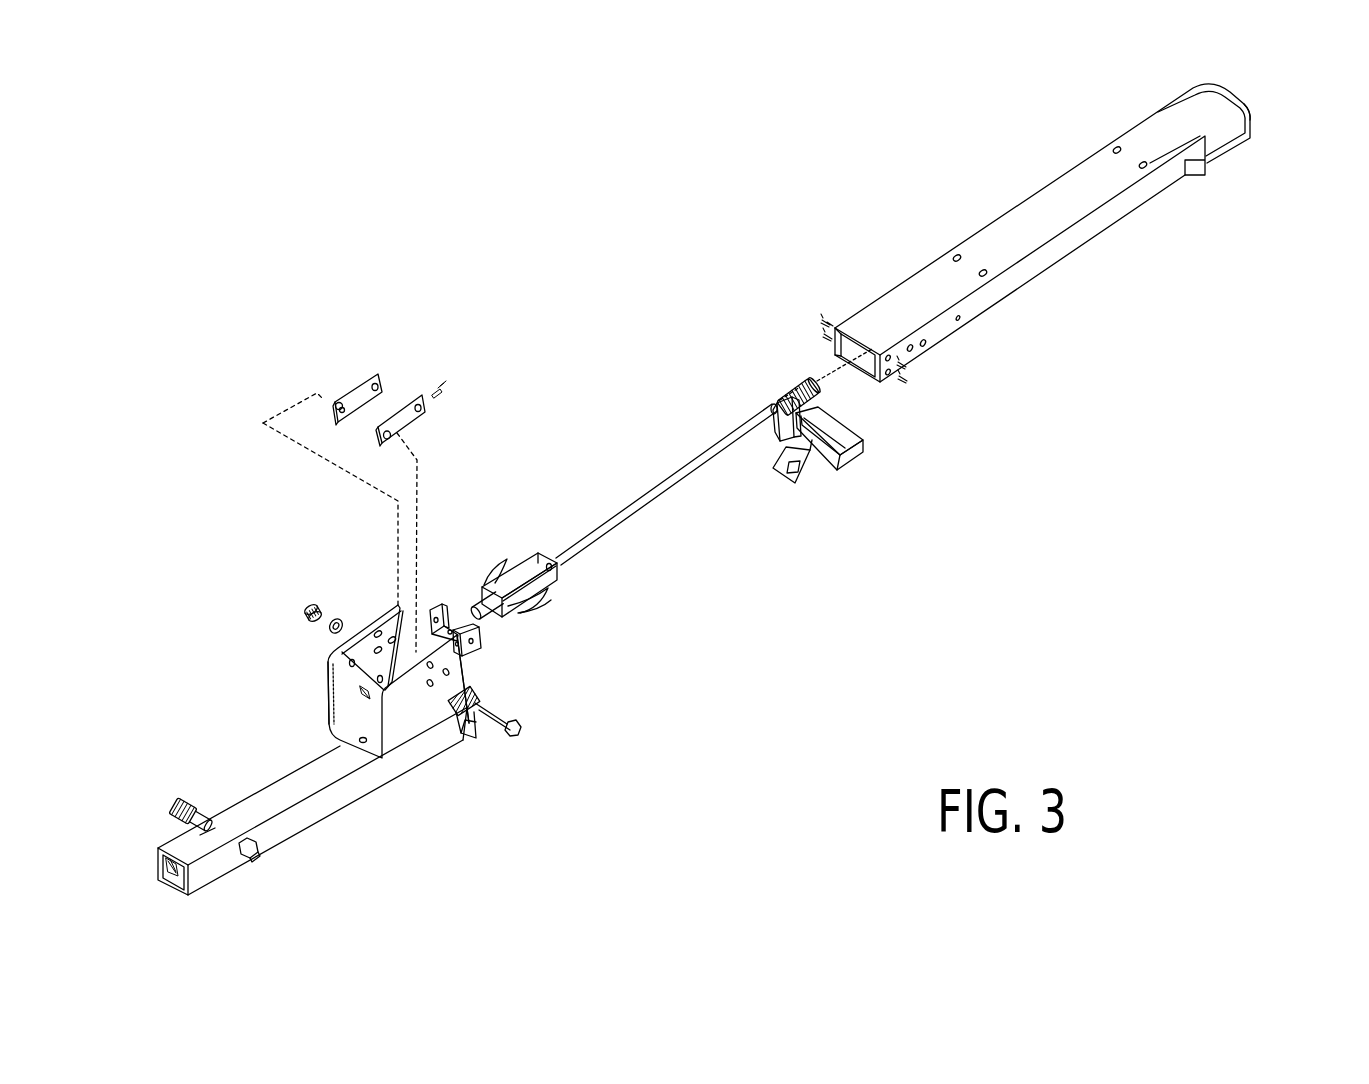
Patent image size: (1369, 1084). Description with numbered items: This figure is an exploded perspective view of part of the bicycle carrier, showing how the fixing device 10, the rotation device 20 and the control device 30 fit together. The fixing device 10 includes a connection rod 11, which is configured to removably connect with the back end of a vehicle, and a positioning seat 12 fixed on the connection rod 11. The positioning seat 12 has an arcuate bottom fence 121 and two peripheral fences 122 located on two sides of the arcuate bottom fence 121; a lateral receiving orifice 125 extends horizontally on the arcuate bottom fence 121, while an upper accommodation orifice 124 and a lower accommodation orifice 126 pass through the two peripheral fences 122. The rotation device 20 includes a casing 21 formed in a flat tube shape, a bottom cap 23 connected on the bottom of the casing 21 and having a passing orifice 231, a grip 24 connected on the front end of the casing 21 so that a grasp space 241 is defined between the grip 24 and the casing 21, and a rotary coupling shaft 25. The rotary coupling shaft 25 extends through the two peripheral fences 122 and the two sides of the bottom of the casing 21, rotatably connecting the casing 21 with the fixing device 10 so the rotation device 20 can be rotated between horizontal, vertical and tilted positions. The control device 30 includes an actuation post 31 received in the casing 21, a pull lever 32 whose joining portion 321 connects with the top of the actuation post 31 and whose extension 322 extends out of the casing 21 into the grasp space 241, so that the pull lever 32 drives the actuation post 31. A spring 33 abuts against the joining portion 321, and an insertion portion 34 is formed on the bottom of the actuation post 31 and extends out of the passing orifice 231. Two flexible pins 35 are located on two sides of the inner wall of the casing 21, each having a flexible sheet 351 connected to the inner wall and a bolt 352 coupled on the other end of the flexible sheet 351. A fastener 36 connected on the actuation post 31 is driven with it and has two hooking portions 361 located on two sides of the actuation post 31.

The fixing device 10 is at (140, 888).
The connection rod 11 is at (222, 866).
The positioning seat 12 is at (360, 757).
The arcuate bottom fence 121 is at (352, 690).
The peripheral fences 122 is at (328, 684).
The upper accommodation orifice 124 is at (423, 684).
The lateral receiving orifice 125 is at (360, 743).
The lower accommodation orifice 126 is at (451, 674).
The rotation device 20 is at (1016, 178).
The casing 21 is at (1010, 290).
The bottom cap 23 is at (485, 641).
The passing orifice 231 is at (440, 611).
The grip 24 is at (1214, 126).
The grasp space 241 is at (1248, 108).
The rotary coupling shaft 25 is at (483, 724).
The control device 30 is at (690, 494).
The actuation post 31 is at (587, 539).
The pull lever 32 is at (982, 460).
The joining portion 321 is at (770, 402).
The extension 322 is at (858, 427).
The spring 33 is at (795, 383).
The insertion portion 34 is at (490, 612).
The flexible pins 35 is at (347, 288).
The flexible sheet 351 is at (375, 375).
The bolt 352 is at (333, 405).
The fastener 36 is at (520, 552).
The hooking portions 361 is at (548, 593).